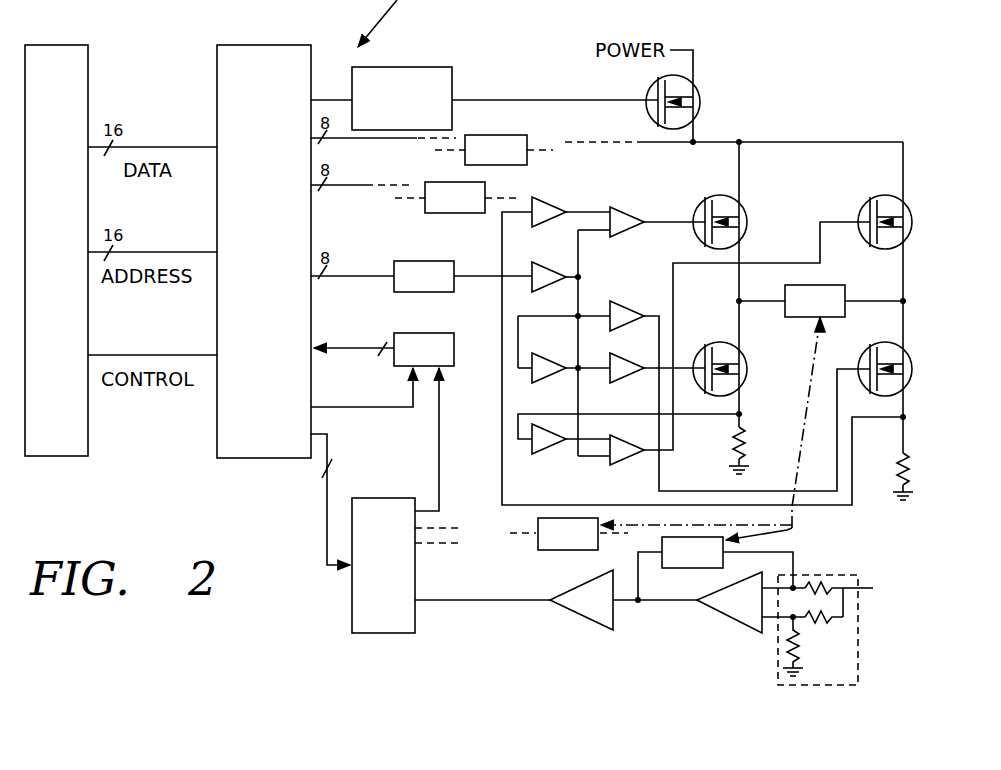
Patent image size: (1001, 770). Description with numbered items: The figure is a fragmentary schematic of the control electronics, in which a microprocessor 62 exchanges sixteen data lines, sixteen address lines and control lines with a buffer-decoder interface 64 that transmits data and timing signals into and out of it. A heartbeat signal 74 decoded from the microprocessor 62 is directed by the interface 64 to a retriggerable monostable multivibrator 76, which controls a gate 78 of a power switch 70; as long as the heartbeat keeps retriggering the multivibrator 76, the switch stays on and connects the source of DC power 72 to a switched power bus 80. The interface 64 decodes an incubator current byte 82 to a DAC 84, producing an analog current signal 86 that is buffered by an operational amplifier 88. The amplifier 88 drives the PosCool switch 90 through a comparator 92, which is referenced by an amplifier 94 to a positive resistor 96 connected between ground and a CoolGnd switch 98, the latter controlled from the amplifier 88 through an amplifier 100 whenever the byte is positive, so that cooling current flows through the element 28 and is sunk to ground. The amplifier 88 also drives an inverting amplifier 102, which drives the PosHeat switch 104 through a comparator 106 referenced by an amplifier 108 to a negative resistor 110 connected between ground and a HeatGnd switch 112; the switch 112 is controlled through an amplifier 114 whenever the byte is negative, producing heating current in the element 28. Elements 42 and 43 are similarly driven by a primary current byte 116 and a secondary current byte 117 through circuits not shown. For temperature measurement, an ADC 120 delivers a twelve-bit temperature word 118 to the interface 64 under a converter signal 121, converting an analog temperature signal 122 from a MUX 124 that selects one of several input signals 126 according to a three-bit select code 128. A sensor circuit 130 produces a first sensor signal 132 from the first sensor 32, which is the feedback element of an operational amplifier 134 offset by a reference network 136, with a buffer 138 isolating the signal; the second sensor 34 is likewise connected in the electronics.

The microprocessor 62 is at (88, 74).
The buffer-decoder interface 64 is at (217, 103).
The heartbeat signal 74 is at (330, 98).
The retriggerable monostable multivibrator 76 is at (420, 67).
The gate 78 is at (645, 92).
The source of DC power 72 is at (694, 62).
The power switch 70 is at (645, 112).
The switched power bus 80 is at (718, 142).
The element 42 is at (513, 135).
The element 43 is at (487, 190).
The secondary current byte 117 is at (363, 141).
The primary current byte 116 is at (345, 187).
The amplifier 94 is at (551, 203).
The comparator 92 is at (620, 209).
The PosCool switch 90 is at (713, 197).
The PosHeat switch 104 is at (879, 197).
The operational amplifier 88 is at (560, 255).
The digital to analog converter 84 is at (418, 261).
The incubator current byte 82 is at (345, 277).
The analog current signal 86 is at (482, 278).
The analog to digital converter 120 is at (454, 346).
The twelve-bit temperature word 118 is at (355, 350).
The converter signal 121 is at (365, 408).
The analog temperature signal 122 is at (440, 470).
The amplifier 100 is at (645, 300).
The inverting amplifier 102 is at (560, 350).
The amplifier 114 is at (630, 378).
The amplifier 108 is at (550, 455).
The comparator 106 is at (640, 470).
The element 28 is at (828, 285).
The HeatGnd switch 112 is at (745, 355).
The CoolGnd switch 98 is at (880, 345).
The negative resistor 110 is at (735, 445).
The positive resistor 96 is at (900, 462).
The analog multiplexer 124 is at (352, 622).
The three-bit select code 128 is at (326, 507).
The input signals 126 is at (443, 548).
The first sensor signal 132 is at (452, 601).
The sensor circuit 130 is at (540, 615).
The second sensor 34 is at (537, 545).
The buffer 138 is at (580, 572).
The first sensor 32 is at (700, 568).
The operational amplifier 134 is at (730, 625).
The reference network 136 is at (778, 645).